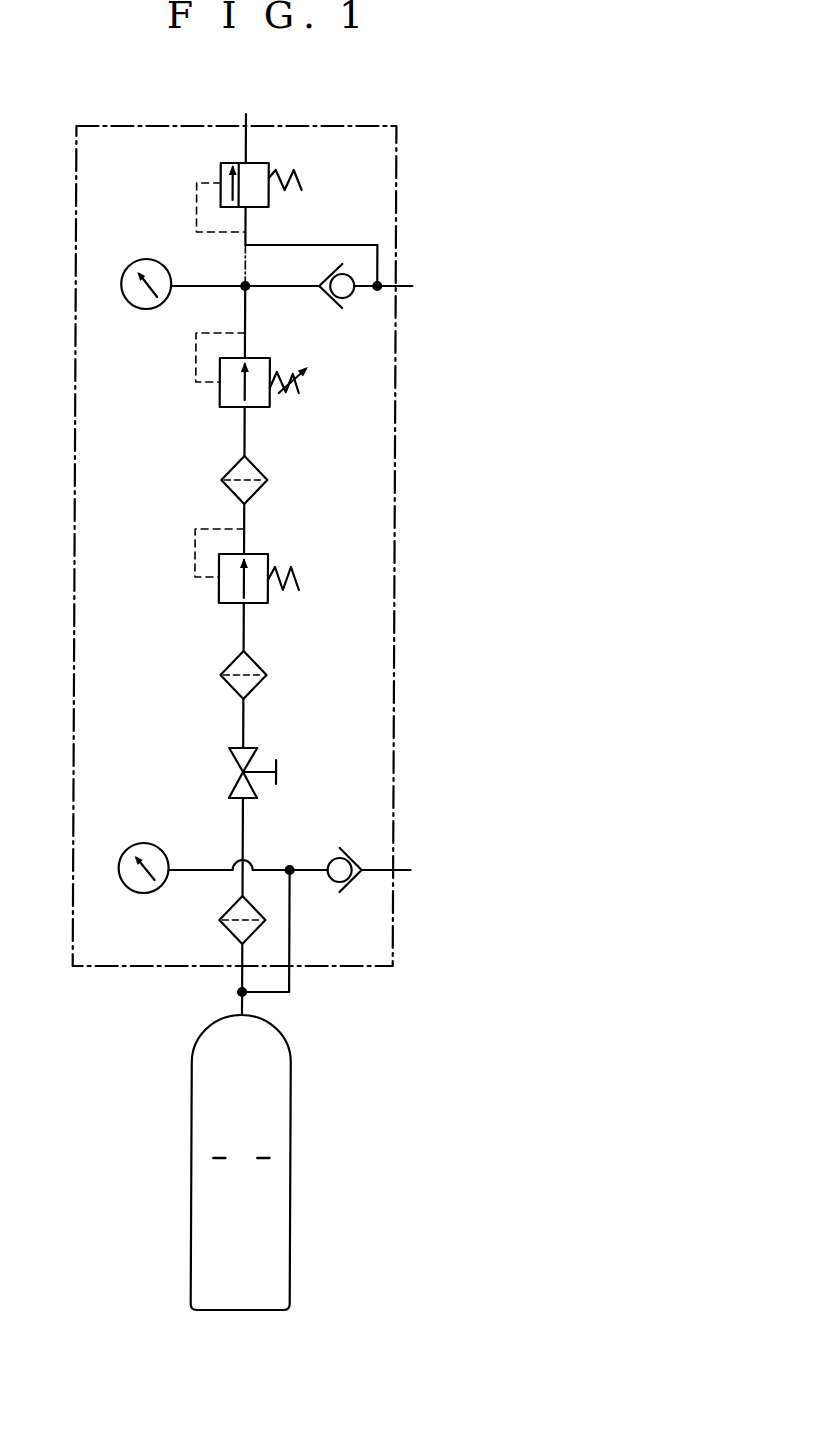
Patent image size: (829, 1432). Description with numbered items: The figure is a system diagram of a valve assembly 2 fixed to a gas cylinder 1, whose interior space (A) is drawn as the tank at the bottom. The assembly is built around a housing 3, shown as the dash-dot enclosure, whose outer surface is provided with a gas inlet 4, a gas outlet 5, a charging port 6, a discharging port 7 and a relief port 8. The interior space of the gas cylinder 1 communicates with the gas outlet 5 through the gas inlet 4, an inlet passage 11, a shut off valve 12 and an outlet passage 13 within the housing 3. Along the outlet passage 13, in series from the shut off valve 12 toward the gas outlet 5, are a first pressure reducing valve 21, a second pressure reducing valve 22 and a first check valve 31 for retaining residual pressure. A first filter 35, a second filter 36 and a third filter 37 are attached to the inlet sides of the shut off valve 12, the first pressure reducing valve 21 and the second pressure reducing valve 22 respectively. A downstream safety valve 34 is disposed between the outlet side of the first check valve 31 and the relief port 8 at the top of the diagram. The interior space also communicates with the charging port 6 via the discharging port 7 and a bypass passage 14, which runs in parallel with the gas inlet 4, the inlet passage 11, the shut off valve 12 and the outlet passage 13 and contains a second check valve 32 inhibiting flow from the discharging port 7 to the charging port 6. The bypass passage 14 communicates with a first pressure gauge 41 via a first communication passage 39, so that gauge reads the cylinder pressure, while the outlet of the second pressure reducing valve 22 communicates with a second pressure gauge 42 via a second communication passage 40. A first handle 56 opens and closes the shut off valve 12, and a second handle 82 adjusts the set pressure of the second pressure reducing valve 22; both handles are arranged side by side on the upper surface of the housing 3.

The gas cylinder 1 is at (293, 1207).
The valve assembly 2 is at (432, 477).
The housing 3 is at (396, 593).
The gas inlet 4 is at (240, 972).
The gas outlet 5 is at (400, 286).
The charging port 6 is at (400, 870).
The discharging port 7 is at (292, 972).
The relief port 8 is at (244, 128).
The inlet passage 11 is at (239, 829).
The shut off valve 12 is at (230, 763).
The outlet passage 13 is at (241, 628).
The bypass passage 14 is at (296, 930).
The first pressure reducing valve 21 is at (219, 598).
The second pressure reducing valve 22 is at (217, 395).
The first check valve 31 is at (343, 300).
The second check valve 32 is at (333, 858).
The downstream safety valve 34 is at (268, 166).
The first filter 35 is at (226, 928).
The second filter 36 is at (226, 685).
The third filter 37 is at (222, 478).
The first communication passage 39 is at (268, 868).
The second communication passage 40 is at (196, 283).
The first pressure gauge 41 is at (141, 843).
The second pressure gauge 42 is at (140, 262).
The first handle 56 is at (289, 772).
The second handle 82 is at (302, 383).